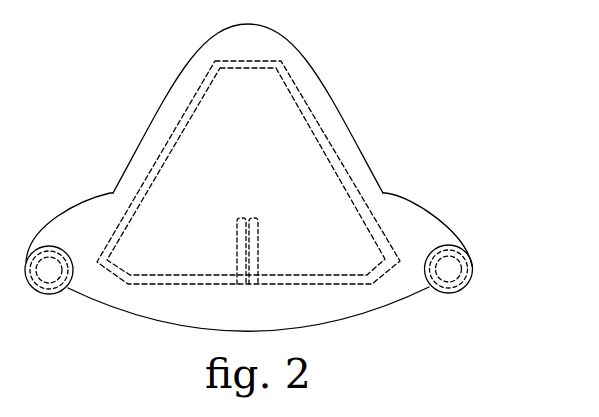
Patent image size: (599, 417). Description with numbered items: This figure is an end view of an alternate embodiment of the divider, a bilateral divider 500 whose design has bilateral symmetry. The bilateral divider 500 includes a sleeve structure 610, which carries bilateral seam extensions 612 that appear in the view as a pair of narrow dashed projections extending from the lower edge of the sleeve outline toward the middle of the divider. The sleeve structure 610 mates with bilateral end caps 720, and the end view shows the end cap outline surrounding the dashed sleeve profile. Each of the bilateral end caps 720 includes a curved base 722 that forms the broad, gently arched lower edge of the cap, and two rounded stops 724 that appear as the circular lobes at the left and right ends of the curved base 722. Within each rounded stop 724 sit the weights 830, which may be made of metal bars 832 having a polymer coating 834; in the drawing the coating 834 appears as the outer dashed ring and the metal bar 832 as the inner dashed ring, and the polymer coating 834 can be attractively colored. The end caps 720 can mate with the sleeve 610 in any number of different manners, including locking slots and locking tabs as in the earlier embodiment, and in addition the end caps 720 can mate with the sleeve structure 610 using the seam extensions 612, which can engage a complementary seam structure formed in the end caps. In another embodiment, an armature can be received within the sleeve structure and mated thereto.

The bilateral divider 500 is at (312, 42).
The sleeve structure 610 is at (297, 97).
The bilateral seam extensions 612 is at (258, 260).
The bilateral end caps 720 is at (353, 133).
The curved base 722 is at (343, 322).
The rounded stops 724 is at (460, 290).
The weights 830 is at (468, 259).
The metal bars 832 is at (450, 267).
The polymer coating 834 is at (452, 251).